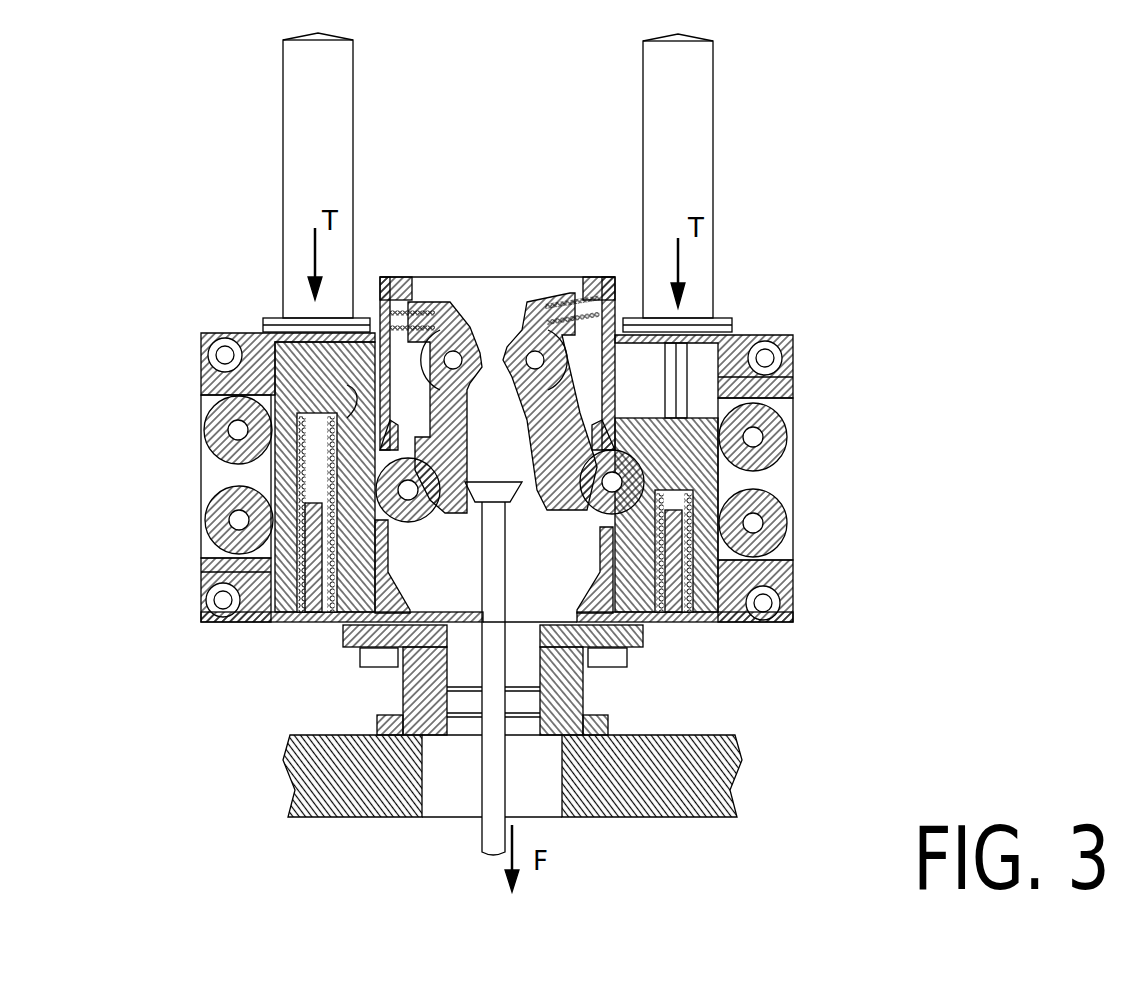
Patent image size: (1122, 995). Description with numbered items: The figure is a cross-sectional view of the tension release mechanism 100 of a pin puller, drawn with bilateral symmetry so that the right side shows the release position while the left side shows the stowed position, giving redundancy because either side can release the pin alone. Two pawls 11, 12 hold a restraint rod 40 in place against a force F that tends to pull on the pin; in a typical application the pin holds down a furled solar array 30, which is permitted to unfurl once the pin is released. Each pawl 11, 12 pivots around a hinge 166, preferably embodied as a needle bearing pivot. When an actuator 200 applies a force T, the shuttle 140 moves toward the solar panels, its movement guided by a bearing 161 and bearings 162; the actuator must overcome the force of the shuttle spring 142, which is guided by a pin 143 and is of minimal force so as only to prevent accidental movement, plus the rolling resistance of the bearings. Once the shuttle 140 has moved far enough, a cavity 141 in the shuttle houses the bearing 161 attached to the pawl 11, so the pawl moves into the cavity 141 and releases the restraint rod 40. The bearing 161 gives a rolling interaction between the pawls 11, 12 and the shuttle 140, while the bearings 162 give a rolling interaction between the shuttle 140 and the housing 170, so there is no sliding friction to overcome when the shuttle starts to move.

The pawl 11 is at (450, 310).
The pawl 12 is at (530, 312).
The solar array 30 is at (628, 817).
The restraint rod 40 is at (480, 797).
The tension release mechanism 100 is at (858, 580).
The shuttle 140 is at (272, 470).
The cavity 141 is at (347, 385).
The shuttle spring 142 is at (283, 612).
The pin 143 is at (312, 618).
The bearing 161 is at (413, 522).
The bearing 162 is at (205, 430).
The hinge 166 is at (503, 345).
The housing 170 is at (237, 332).
The actuator 200 is at (285, 115).